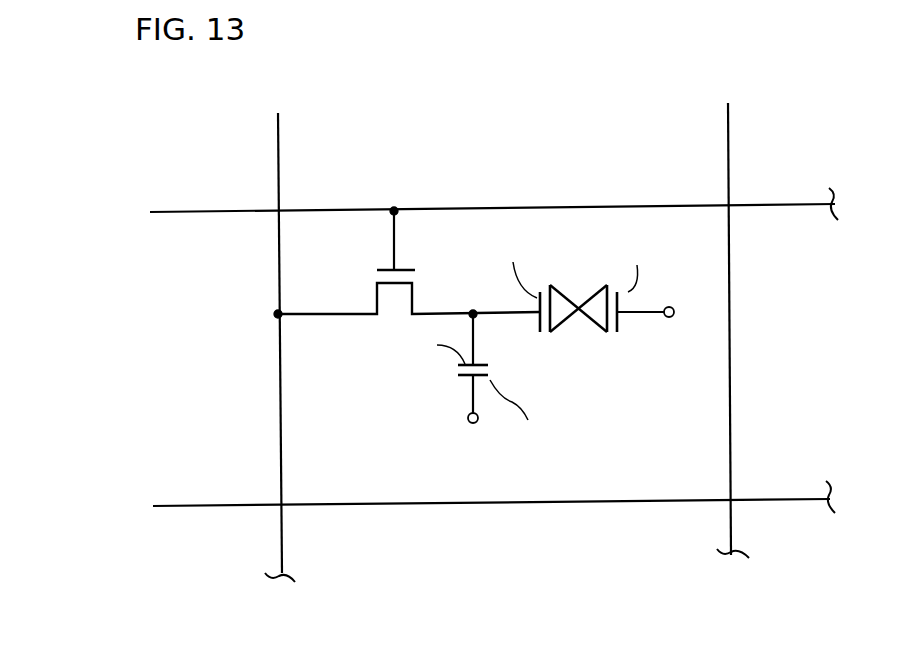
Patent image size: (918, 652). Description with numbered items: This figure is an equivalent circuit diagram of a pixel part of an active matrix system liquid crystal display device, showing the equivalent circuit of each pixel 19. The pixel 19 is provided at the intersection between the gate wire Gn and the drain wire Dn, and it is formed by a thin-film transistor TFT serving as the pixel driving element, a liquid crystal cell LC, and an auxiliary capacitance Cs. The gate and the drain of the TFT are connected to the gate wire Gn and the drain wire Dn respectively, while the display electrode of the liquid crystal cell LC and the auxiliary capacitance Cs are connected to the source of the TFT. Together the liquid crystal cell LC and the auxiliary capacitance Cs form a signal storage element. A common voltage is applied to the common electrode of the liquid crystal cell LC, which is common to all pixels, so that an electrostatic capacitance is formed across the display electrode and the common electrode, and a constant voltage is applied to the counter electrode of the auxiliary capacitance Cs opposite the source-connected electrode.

The pixel 19 is at (492, 207).
The drain wire Dn is at (274, 330).
The gate wire Gn is at (471, 208).
The thin-film transistor TFT is at (375, 287).
The auxiliary capacitance Cs is at (462, 389).
The liquid crystal cell LC is at (565, 325).